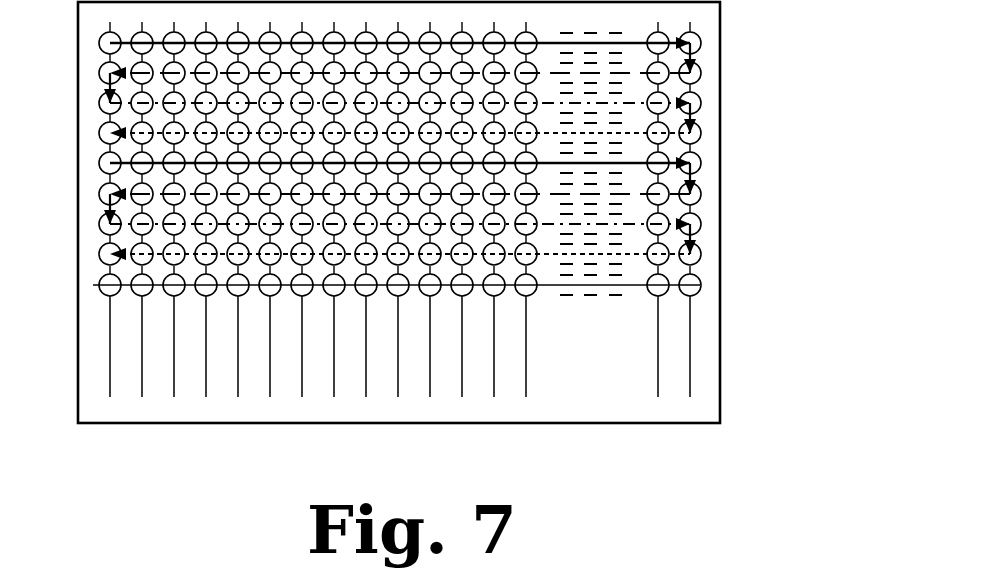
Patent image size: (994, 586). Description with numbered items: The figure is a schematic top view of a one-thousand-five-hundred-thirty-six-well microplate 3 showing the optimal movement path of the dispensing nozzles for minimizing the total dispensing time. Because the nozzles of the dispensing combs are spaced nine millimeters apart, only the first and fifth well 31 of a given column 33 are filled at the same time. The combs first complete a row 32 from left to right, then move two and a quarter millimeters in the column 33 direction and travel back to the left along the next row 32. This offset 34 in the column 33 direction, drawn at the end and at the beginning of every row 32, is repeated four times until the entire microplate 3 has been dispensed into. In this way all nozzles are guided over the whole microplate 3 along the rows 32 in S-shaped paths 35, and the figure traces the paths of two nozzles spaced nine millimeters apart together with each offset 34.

The microplate 3 is at (720, 393).
The well 31 is at (270, 295).
The row 32 is at (690, 285).
The column 33 is at (658, 377).
The offset 34 is at (690, 102).
The S-shaped path 35 is at (603, 165).